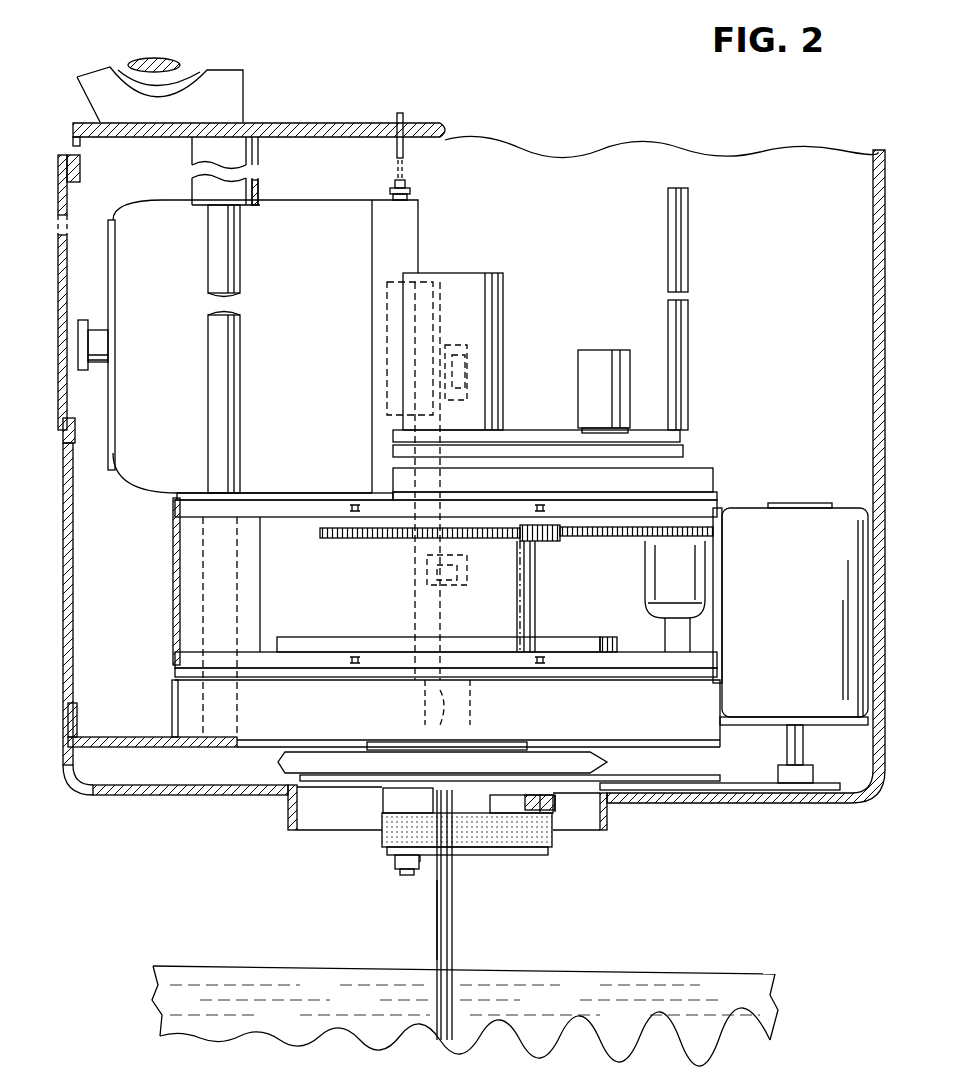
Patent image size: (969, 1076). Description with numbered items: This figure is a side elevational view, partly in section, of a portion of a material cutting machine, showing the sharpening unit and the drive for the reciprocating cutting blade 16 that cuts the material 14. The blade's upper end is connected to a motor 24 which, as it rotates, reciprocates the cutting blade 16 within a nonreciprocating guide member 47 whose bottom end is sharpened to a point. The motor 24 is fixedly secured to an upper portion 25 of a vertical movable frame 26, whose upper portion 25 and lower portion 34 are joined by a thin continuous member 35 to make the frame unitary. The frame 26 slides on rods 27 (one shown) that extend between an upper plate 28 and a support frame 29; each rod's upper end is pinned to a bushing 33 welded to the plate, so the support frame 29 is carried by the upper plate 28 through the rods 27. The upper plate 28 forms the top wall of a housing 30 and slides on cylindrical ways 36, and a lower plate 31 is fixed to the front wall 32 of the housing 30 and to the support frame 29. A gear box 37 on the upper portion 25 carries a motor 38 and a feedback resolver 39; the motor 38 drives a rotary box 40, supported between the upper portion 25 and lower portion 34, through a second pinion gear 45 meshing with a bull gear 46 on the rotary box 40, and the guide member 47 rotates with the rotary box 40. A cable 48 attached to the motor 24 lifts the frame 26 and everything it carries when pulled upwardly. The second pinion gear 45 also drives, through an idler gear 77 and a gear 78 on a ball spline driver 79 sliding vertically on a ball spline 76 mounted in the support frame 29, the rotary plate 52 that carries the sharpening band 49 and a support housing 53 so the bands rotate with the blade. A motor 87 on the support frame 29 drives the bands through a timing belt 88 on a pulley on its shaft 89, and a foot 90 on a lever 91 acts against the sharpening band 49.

The material 14 is at (610, 975).
The cutting blade 16 is at (429, 925).
The motor 24 is at (318, 295).
The upper portion 25 is at (277, 493).
The vertical movable frame 26 is at (271, 592).
The rods 27 is at (242, 370).
The upper plate 28 is at (292, 138).
The support frame 29 is at (164, 709).
The housing 30 is at (61, 598).
The lower plate 31 is at (100, 745).
The front wall 32 is at (70, 510).
The bushing 33 is at (258, 192).
The lower portion 34 is at (290, 670).
The thin continuous member 35 is at (175, 580).
The cylindrical ways 36 is at (170, 60).
The gear box 37 is at (724, 473).
The motor 38 is at (503, 273).
The feedback resolver 39 is at (633, 377).
The rotary box 40 is at (528, 602).
The second pinion gear 45 is at (558, 540).
The bull gear 46 is at (320, 537).
The guide member 47 is at (453, 945).
The cable 48 is at (408, 150).
The sharpening band 49 is at (480, 848).
The rotary plate 52 is at (616, 765).
The support housing 53 is at (561, 814).
The ball spline 76 is at (692, 395).
The idler gear 77 is at (607, 536).
The gear 78 is at (710, 523).
The ball spline driver 79 is at (652, 570).
The motor 87 is at (800, 587).
The timing belt 88 is at (730, 790).
The shaft 89 is at (805, 752).
The foot 90 is at (458, 852).
The lever 91 is at (429, 863).